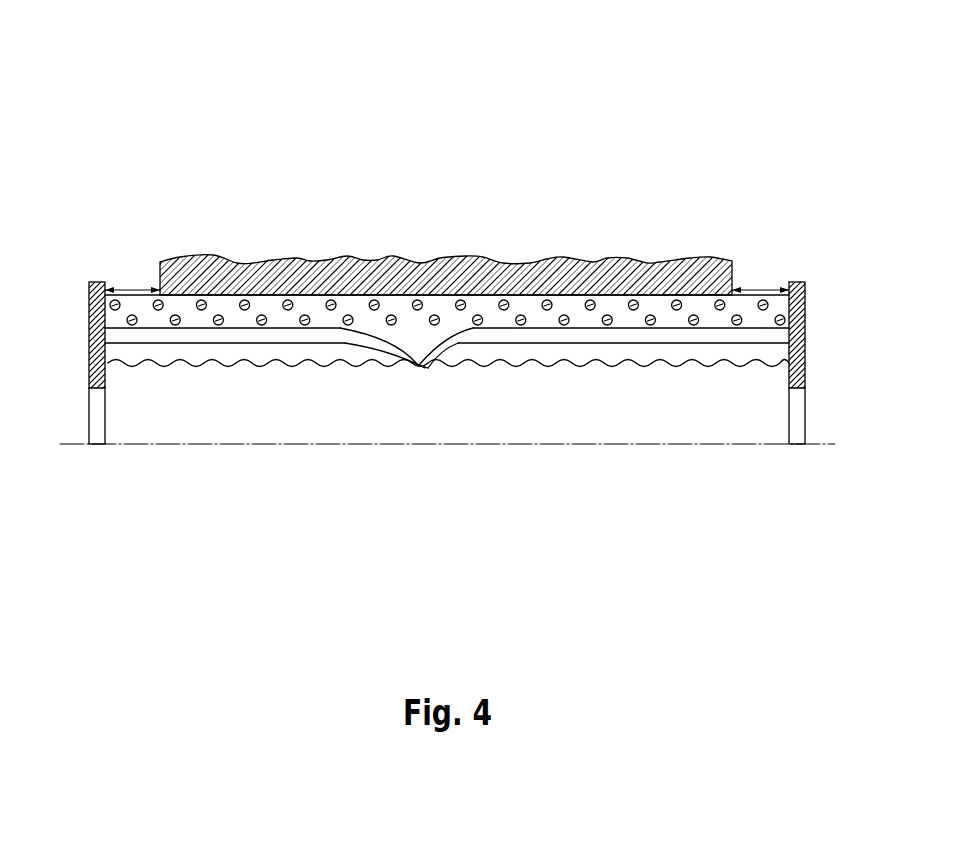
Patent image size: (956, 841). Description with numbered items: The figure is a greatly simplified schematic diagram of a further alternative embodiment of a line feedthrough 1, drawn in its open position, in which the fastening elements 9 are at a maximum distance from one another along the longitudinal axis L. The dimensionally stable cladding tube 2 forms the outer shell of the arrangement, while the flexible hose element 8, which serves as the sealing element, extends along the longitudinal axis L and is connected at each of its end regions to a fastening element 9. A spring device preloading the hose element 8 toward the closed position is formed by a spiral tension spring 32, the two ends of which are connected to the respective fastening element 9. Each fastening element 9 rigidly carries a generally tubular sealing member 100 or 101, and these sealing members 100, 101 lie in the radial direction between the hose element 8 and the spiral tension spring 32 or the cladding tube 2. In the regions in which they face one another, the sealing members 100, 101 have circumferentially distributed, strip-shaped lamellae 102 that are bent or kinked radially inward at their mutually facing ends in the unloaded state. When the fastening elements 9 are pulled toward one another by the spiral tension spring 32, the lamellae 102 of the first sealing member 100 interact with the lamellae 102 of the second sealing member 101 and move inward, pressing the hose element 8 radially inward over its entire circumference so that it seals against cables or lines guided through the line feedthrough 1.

The line feedthrough 1 is at (162, 110).
The cladding tube 2 is at (295, 282).
The hose element 8 is at (180, 365).
The fastening element 9 is at (88, 304).
The spiral tension spring 32 is at (378, 306).
The first sealing member 100 is at (206, 337).
The second sealing member 101 is at (596, 337).
The lamellae 102 is at (372, 333).
The longitudinal axis L is at (733, 445).